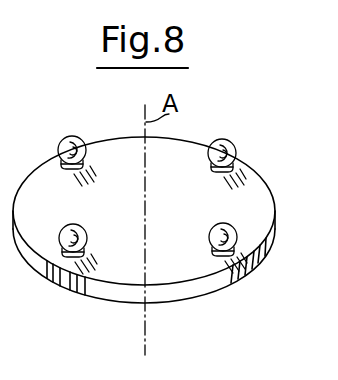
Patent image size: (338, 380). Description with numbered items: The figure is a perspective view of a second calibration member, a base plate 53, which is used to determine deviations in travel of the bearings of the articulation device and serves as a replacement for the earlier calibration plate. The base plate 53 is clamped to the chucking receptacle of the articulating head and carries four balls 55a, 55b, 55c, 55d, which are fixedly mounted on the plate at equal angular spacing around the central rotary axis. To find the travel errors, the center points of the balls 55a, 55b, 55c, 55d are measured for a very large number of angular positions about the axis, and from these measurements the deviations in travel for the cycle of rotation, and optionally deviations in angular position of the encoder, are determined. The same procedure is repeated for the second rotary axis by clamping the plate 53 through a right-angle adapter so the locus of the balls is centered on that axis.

The base plate 53 is at (255, 188).
The ball 55a is at (239, 132).
The ball 55b is at (61, 143).
The ball 55c is at (63, 240).
The ball 55d is at (237, 246).